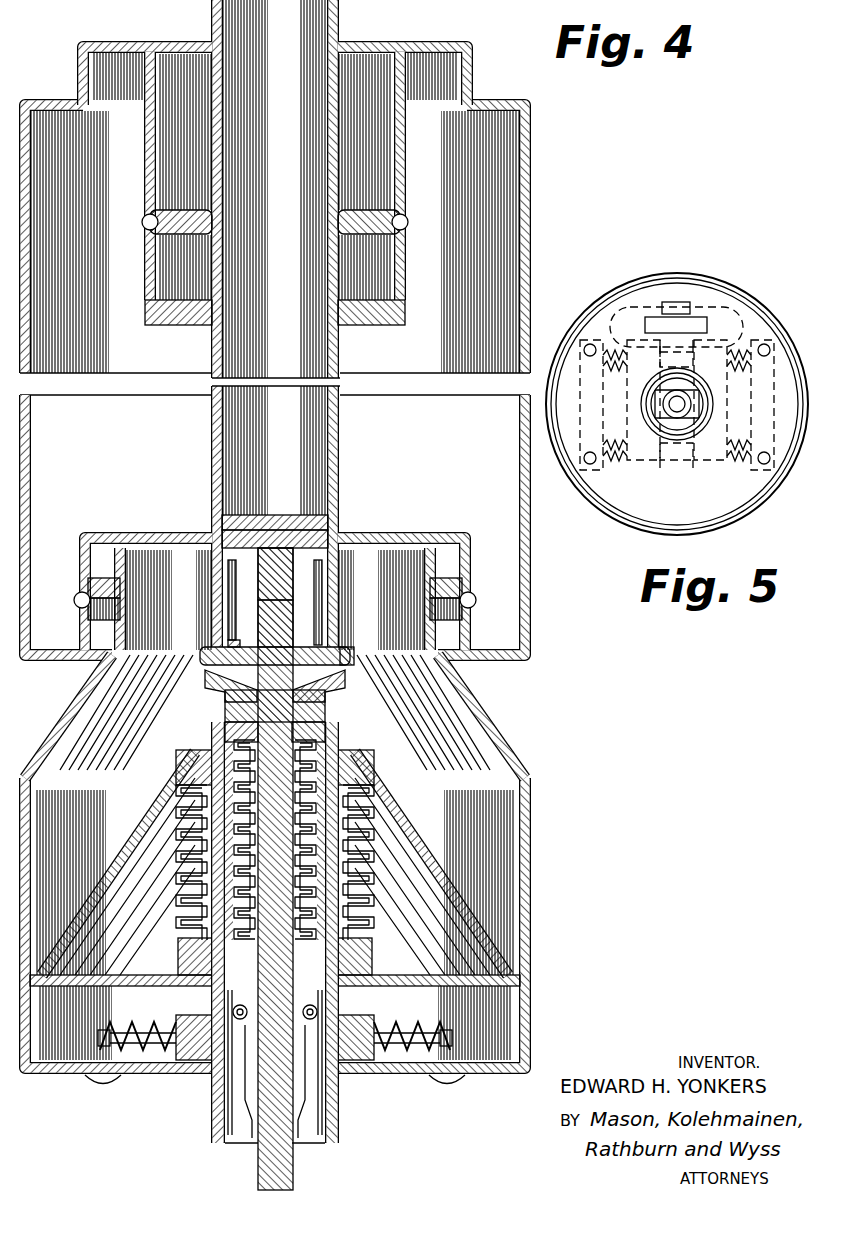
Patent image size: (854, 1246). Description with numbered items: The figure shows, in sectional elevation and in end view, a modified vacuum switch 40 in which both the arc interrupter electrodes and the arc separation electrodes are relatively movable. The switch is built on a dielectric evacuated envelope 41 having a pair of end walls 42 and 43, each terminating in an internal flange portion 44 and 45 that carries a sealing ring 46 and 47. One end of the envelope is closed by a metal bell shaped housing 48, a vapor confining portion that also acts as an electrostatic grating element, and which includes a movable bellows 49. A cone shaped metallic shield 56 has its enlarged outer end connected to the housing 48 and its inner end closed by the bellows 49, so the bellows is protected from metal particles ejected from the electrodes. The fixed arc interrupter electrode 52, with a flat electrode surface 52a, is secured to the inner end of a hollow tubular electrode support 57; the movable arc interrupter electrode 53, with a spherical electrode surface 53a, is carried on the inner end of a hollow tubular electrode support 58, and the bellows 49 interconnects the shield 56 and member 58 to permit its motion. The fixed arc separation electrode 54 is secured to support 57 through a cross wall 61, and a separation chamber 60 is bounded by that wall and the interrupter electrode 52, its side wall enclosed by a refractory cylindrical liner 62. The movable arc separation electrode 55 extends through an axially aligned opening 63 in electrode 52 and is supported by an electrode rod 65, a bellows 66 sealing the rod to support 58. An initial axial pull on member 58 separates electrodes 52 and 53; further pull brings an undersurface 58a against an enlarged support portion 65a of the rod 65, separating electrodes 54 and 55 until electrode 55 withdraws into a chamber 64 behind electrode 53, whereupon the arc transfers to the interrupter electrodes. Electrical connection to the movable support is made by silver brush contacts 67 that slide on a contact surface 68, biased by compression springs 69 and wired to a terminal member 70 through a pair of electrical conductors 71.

In FIG. 4, the modified vacuum switch 40 is at (586, 119).
In FIG. 4, the dielectric evacuated envelope 41 is at (532, 140).
In FIG. 4, the end wall 42 is at (469, 74).
In FIG. 4, the end wall 43 is at (493, 665).
In FIG. 4, the internal flange portion 44 is at (410, 222).
In FIG. 4, the internal flange portion 45 is at (476, 600).
In FIG. 4, the sealing ring 46 is at (402, 300).
In FIG. 4, the sealing ring 47 is at (462, 540).
In FIG. 4, the bell shaped housing 48 is at (533, 862).
In FIG. 5, the bell shaped housing 48 is at (751, 510).
In FIG. 4, the bellows 49 is at (376, 912).
In FIG. 4, the arc interrupter electrode 52 is at (212, 648).
In FIG. 4, the flat electrode surface 52a is at (352, 665).
In FIG. 4, the arc interrupter electrode 53 is at (190, 700).
In FIG. 4, the spherical electrode surface 53a is at (345, 695).
In FIG. 4, the arc separation electrode 54 is at (295, 590).
In FIG. 4, the arc separation electrode 55 is at (290, 642).
In FIG. 4, the cone shaped metallic shield 56 is at (425, 845).
In FIG. 4, the hollow tubular electrode support 57 is at (341, 418).
In FIG. 4, the hollow tubular electrode support 58 is at (345, 980).
In FIG. 5, the hollow tubular electrode support 58 is at (700, 422).
In FIG. 4, the undersurface 58a is at (330, 715).
In FIG. 4, the separation chamber 60 is at (332, 533).
In FIG. 4, the cross wall 61 is at (300, 516).
In FIG. 4, the cylindrical liner 62 is at (228, 580).
In FIG. 4, the axially aligned opening 63 is at (232, 640).
In FIG. 4, the chamber 64 is at (325, 700).
In FIG. 4, the electrode rod 65 is at (293, 1165).
In FIG. 4, the enlarged support portion 65a is at (332, 728).
In FIG. 4, the bellows 66 is at (355, 950).
In FIG. 4, the fixed contacts 67 is at (194, 1018).
In FIG. 5, the fixed contacts 67 is at (725, 415).
In FIG. 4, the movable contact surface 68 is at (212, 1078).
In FIG. 5, the movable contact surface 68 is at (676, 442).
In FIG. 4, the compression springs 69 is at (155, 1060).
In FIG. 5, the terminal member 70 is at (680, 302).
In FIG. 5, the electrical conductors 71 is at (742, 310).